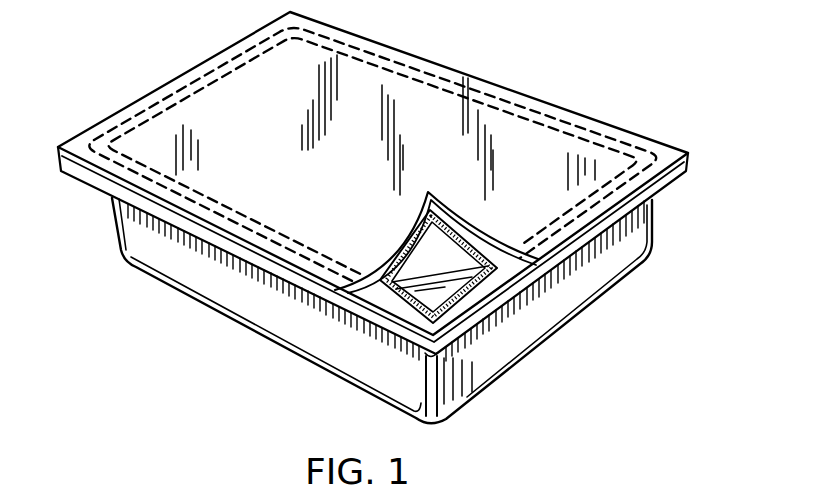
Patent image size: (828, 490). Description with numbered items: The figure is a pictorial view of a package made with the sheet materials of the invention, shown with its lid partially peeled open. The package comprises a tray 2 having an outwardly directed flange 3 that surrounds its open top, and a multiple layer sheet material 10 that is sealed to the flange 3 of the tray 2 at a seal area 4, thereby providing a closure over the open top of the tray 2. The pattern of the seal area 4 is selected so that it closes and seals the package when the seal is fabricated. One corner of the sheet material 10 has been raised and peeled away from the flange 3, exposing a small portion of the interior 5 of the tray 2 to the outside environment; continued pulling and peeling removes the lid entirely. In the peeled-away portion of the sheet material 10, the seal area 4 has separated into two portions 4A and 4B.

The tray 2 is at (120, 228).
The flange 3 is at (490, 320).
The seal area 4 is at (413, 62).
The seal area portion 4A is at (473, 322).
The seal area portion 4B is at (479, 236).
The interior portion 5 is at (385, 288).
The multiple layer sheet material 10 is at (207, 118).